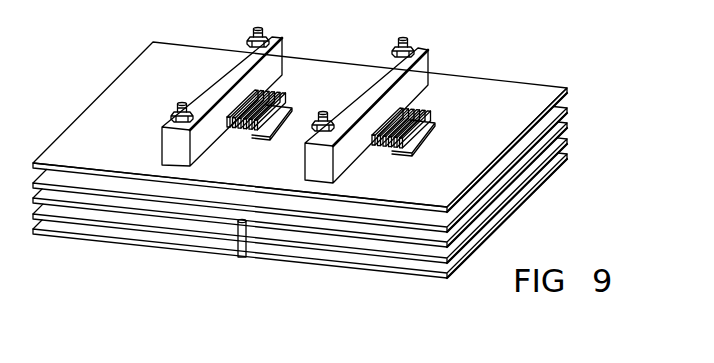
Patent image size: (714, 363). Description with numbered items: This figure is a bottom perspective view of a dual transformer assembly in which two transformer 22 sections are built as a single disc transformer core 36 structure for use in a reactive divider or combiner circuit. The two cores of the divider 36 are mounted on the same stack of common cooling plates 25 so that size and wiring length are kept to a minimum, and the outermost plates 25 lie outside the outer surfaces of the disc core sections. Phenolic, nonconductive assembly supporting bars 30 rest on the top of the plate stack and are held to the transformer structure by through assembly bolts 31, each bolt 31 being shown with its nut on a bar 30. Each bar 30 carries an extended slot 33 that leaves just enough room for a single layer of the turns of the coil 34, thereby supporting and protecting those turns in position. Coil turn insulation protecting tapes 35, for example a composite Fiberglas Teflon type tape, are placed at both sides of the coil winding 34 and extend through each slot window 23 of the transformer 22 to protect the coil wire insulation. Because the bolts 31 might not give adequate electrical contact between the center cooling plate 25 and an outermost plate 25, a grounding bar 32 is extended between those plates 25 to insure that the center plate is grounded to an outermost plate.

The transformer 22 is at (480, 65).
The slot window 23 is at (417, 123).
The cooling plates 25 is at (569, 156).
The assembly supporting bars 30 is at (426, 64).
The assembly bolts 31 is at (257, 30).
The grounding bar 32 is at (236, 259).
The extended slot 33 is at (237, 112).
The coil 34 is at (405, 117).
The coil turn insulation protecting tapes 35 is at (252, 136).
The disc transformer core structure 36 is at (86, 251).